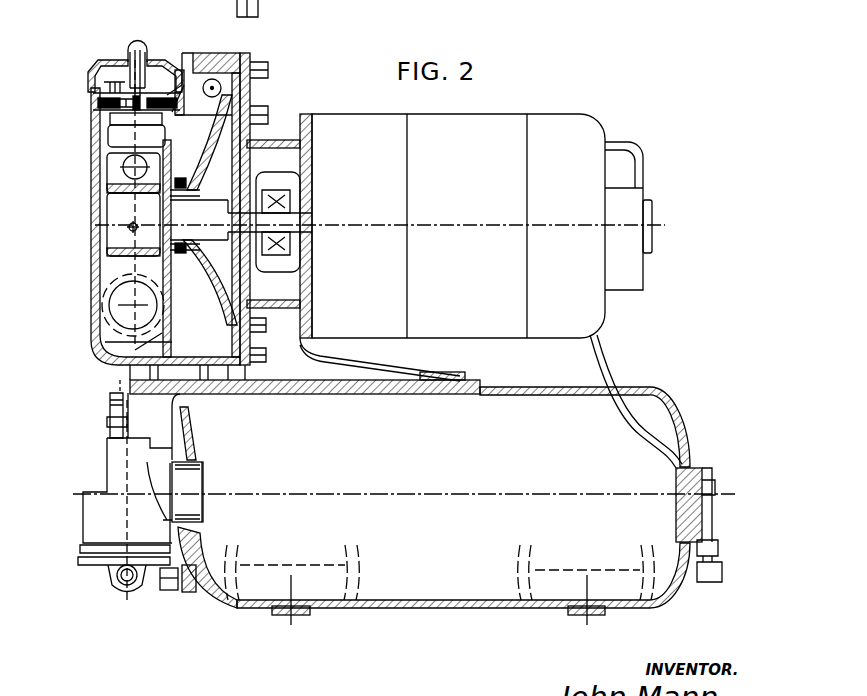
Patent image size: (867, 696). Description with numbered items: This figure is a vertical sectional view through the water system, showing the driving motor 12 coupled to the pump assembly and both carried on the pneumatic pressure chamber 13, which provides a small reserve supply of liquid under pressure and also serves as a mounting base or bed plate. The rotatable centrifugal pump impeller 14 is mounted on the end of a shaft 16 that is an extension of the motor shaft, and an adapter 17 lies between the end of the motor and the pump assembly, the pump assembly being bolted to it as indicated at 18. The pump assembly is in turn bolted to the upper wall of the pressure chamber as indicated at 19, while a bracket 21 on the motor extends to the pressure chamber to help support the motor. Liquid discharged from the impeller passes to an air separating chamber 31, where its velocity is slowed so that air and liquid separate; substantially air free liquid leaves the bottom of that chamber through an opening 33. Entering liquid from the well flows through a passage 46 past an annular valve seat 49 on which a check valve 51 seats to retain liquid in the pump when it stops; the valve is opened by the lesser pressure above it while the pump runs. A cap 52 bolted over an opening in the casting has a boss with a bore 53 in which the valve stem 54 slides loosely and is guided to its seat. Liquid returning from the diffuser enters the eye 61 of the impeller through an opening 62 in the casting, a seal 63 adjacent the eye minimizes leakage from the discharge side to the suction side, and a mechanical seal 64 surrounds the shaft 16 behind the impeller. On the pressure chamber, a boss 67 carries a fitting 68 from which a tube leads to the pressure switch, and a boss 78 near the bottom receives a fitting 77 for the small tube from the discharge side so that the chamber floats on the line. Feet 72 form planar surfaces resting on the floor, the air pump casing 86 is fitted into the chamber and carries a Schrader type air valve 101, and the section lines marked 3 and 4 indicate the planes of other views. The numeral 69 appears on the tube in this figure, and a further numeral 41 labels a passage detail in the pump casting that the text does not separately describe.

The section line 3- 3 is at (213, 27).
The section line 4- 4 is at (153, 24).
The driving motor 12 is at (482, 226).
The pneumatic pressure chamber 13 is at (431, 497).
The pump impeller 14 is at (252, 112).
The shaft 16 is at (300, 217).
The adapter 17 is at (276, 138).
The bolts 18 is at (269, 64).
The bolting to pressure chamber 19 is at (205, 388).
The bracket 21 is at (362, 365).
The air separating chamber 31 is at (165, 217).
The opening 33 is at (172, 343).
The passage 41 is at (135, 167).
The passage 46 is at (136, 202).
The annular valve seat 49 is at (96, 104).
The check valve 51 is at (113, 74).
The cap 52 is at (130, 44).
The bore 53 is at (147, 60).
The stem 54 is at (128, 50).
The eye of the impeller 61 is at (179, 178).
The opening 62 is at (100, 230).
The seal 63 is at (185, 245).
The mechanical seal 64 is at (270, 190).
The boss 67 is at (686, 592).
The fitting 68 is at (722, 575).
The tube 69 is at (608, 366).
The feet 72 is at (342, 600).
The fitting 77 is at (170, 590).
The boss 78 is at (192, 592).
The casing 86 is at (95, 505).
The air valve 101 is at (110, 410).